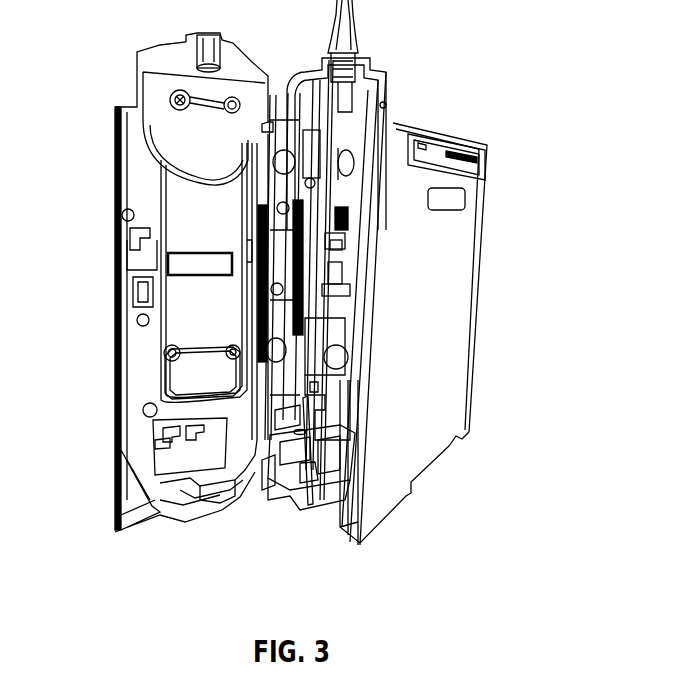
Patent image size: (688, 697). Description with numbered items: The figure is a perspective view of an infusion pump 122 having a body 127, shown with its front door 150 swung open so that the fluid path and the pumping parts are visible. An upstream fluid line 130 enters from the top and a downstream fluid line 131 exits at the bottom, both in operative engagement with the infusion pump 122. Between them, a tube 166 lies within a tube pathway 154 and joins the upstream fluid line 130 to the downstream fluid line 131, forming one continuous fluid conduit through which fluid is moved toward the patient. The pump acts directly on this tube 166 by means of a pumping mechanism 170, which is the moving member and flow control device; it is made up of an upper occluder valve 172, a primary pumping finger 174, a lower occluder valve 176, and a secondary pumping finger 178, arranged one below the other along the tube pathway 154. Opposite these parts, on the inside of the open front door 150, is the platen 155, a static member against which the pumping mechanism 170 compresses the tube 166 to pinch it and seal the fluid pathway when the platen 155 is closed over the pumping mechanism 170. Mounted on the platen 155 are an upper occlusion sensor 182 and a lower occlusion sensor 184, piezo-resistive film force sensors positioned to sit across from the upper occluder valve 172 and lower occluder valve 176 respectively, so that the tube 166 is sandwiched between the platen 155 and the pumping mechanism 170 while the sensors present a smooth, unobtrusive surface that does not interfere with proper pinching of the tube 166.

The infusion pump 122 is at (506, 121).
The body 127 is at (455, 424).
The upstream fluid line 130 is at (345, 33).
The downstream fluid line 131 is at (305, 505).
The front door 150 is at (145, 357).
The tube pathway 154 is at (333, 97).
The platen 155 is at (271, 289).
The tube 166 is at (332, 182).
The pumping mechanism 170 is at (355, 245).
The upper occluder valve 172 is at (353, 213).
The primary pumping finger 174 is at (350, 290).
The lower occluder valve 176 is at (345, 322).
The secondary pumping finger 178 is at (345, 368).
The upper occlusion sensor 182 is at (277, 208).
The lower occlusion sensor 184 is at (247, 250).